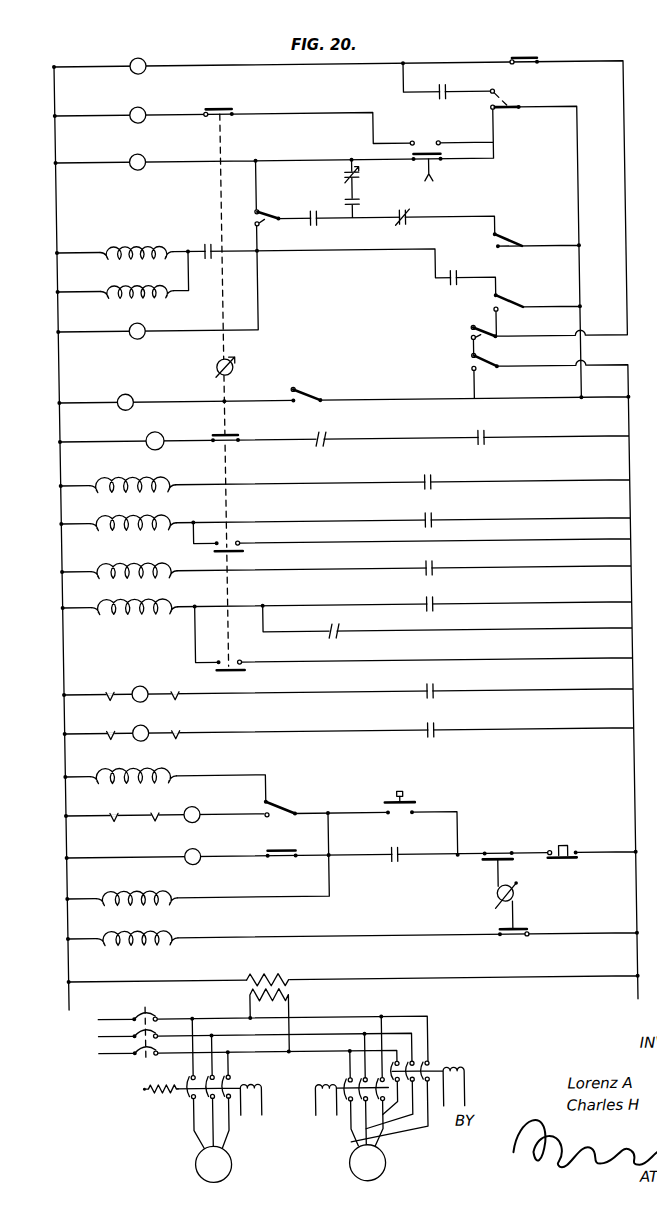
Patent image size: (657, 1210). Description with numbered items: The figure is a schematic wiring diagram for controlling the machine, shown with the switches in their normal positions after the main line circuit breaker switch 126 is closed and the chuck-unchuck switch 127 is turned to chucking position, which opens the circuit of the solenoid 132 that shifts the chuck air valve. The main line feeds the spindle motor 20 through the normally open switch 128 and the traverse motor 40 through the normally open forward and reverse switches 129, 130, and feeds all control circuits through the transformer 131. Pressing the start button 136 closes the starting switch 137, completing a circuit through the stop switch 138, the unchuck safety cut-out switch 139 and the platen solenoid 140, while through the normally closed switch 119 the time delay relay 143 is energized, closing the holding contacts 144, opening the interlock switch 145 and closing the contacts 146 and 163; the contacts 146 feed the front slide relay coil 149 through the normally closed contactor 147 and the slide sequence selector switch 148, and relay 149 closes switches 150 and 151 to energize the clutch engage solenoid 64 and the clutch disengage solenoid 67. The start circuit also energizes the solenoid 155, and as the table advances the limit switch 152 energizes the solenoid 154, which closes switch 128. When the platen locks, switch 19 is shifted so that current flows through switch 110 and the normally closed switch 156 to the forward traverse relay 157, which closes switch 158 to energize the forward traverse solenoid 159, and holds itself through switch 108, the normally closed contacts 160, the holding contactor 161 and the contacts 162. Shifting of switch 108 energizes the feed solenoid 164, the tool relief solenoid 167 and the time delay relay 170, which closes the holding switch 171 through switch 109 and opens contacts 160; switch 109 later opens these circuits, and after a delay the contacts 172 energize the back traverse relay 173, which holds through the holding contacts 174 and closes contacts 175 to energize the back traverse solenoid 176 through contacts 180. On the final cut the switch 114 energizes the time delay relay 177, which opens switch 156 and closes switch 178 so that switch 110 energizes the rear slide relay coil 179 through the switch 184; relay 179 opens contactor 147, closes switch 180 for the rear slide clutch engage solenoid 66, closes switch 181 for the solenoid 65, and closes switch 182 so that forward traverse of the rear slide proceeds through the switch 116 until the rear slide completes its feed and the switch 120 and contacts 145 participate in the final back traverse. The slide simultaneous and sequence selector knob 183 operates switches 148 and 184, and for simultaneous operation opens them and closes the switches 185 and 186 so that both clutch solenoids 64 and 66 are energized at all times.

The back traverse relay 173 is at (144, 66).
The rear slide relay coil 179 is at (140, 113).
The switch 184 is at (218, 110).
The forward traverse relay 157 is at (142, 160).
The normally closed switch contacts 172 is at (533, 63).
The normally open holding contacts 174 is at (448, 95).
The normally closed switch 110 is at (508, 110).
The normally open switch 178 is at (421, 143).
The normally closed switch 156 is at (432, 168).
The normally closed contacts 162 is at (360, 180).
The holding contactor 161 is at (360, 207).
The normally closed contacts 160 is at (406, 220).
The switch 116 is at (266, 215).
The normally open switch 182 is at (311, 212).
The feed solenoid 164 is at (135, 249).
The contacts 163 is at (204, 248).
The switch 108 is at (504, 247).
The tool relief solenoid 167 is at (140, 289).
The time delay relay 170 is at (141, 332).
The holding switch 171 is at (443, 285).
The switch 109 is at (504, 306).
The switch 120 is at (466, 337).
The switch 19 is at (467, 364).
The slide simultaneous and sequence selector knob 183 is at (230, 366).
The time delay relay 177 is at (129, 400).
The normally open switch 114 is at (302, 396).
The front slide relay coil 149 is at (158, 437).
The slide sequence selector switch 148 is at (243, 432).
The normally closed contactor 147 is at (323, 440).
The switch contact 146 is at (478, 440).
The solenoid 65 is at (135, 482).
The switch 181 is at (426, 482).
The clutch engage solenoid 64 is at (135, 522).
The switch 150 is at (426, 521).
The switch 185 is at (233, 546).
The clutch disengage solenoid 67 is at (117, 566).
The switch 151 is at (426, 567).
The rear slide clutch engage solenoid 66 is at (125, 610).
The switch 180 is at (426, 606).
The interlock switch 145 is at (330, 637).
The switch 186 is at (233, 666).
The back traverse solenoid 176 is at (136, 678).
The switch contacts 175 is at (425, 694).
The forward traverse solenoid 159 is at (151, 725).
The switch 158 is at (425, 733).
The solenoid 155 is at (150, 769).
The limit switch 152 is at (282, 799).
The solenoid 154 is at (197, 810).
The start button 136 is at (388, 794).
The normally open starting switch 137 is at (418, 805).
The normally closed switch 119 is at (278, 847).
The time delay relay 143 is at (198, 852).
The holding contacts 144 is at (386, 871).
The unchuck safety cut-out switch 139 is at (483, 856).
The normally closed stop switch 138 is at (558, 846).
The platen solenoid 140 is at (142, 898).
The chuck-unchuck switch 127 is at (524, 925).
The solenoid 132 is at (159, 934).
The transformer 131 is at (280, 991).
The main line circuit breaker switch 126 is at (147, 1010).
The normally open switch 128 is at (174, 1100).
The forward switch 129 is at (337, 1086).
The reverse switch 130 is at (452, 1054).
The spindle motor 20 is at (213, 1164).
The traverse motor 40 is at (367, 1163).